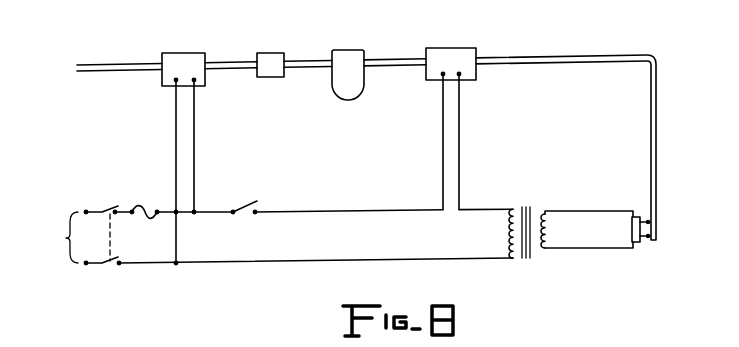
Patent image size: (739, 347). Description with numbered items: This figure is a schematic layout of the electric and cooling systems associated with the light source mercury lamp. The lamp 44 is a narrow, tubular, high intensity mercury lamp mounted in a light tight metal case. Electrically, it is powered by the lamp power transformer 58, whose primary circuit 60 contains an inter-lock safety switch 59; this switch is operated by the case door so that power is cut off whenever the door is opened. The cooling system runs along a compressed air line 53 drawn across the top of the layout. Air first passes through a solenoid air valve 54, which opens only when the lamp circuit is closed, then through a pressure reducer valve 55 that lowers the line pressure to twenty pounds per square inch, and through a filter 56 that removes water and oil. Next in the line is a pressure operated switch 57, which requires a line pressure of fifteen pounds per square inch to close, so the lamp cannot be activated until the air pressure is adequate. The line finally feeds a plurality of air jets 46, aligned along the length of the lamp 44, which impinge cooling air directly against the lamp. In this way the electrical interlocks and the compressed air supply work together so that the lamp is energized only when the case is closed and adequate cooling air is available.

The compressed air line 53 is at (129, 63).
The solenoid air valve 54 is at (197, 60).
The pressure reducer valve 55 is at (263, 56).
The filter 56 is at (343, 57).
The pressure operated switch 57 is at (444, 50).
The lamp power transformer 58 is at (525, 205).
The inter-lock safety switch 59 is at (243, 206).
The primary circuit 60 is at (81, 235).
The lamp 44 is at (632, 236).
The air jets 46 is at (651, 234).